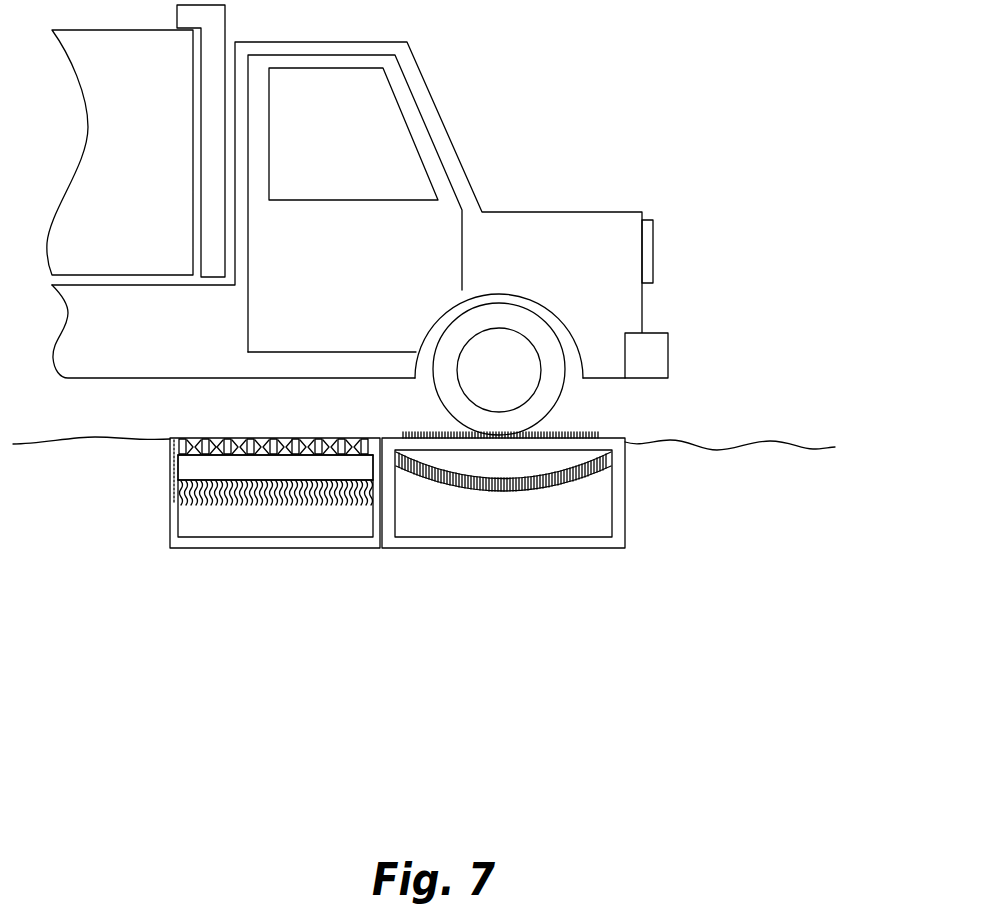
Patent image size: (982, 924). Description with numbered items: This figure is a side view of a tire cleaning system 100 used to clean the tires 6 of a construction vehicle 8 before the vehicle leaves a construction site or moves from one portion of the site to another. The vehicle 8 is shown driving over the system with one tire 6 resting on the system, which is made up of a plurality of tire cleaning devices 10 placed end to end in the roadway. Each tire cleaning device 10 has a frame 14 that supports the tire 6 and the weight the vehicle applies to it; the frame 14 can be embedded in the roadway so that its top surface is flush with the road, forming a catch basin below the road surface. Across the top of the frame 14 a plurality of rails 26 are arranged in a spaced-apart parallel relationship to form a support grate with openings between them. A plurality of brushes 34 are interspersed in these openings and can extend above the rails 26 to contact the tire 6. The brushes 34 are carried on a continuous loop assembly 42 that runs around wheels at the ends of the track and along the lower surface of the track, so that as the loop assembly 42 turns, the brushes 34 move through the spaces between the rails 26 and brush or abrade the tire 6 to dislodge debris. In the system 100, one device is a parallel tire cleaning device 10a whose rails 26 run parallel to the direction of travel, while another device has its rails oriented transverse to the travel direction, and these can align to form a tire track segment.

The tire 6 is at (542, 400).
The construction vehicle 8 is at (435, 125).
The tire cleaning device 10 is at (399, 523).
The parallel tire cleaning device 10a is at (612, 548).
The frame 14 is at (173, 527).
The rails 26 is at (198, 438).
The brushes 34 is at (238, 438).
The continuous loop assembly 42 is at (195, 470).
The tire cleaning system 100 is at (399, 558).